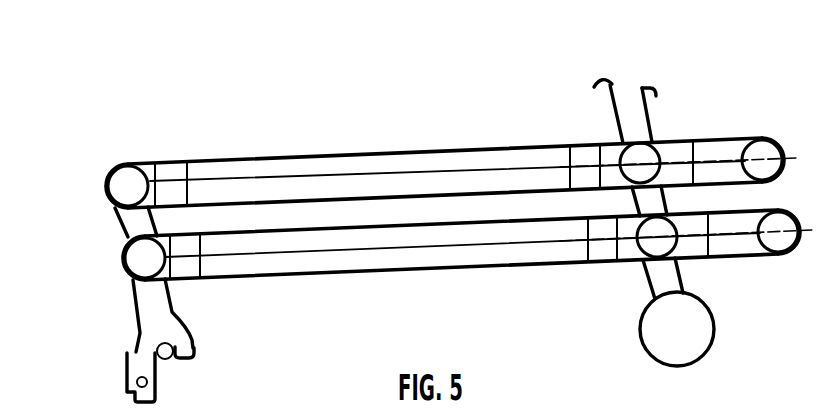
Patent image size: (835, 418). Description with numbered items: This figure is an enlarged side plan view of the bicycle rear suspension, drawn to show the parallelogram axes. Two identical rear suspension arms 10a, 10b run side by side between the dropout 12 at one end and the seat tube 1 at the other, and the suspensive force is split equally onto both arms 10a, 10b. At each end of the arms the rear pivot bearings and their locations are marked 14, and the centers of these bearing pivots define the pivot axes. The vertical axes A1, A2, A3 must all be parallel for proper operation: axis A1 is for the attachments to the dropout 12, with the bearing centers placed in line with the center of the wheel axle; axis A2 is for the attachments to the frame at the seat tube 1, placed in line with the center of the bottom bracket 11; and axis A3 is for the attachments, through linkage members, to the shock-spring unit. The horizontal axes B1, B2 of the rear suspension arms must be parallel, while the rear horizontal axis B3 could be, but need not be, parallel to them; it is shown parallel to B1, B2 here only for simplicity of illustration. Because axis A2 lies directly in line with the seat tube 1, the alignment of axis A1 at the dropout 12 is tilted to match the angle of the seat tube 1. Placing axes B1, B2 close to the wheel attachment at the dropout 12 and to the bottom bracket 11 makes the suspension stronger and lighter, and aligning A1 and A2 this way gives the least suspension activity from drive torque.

The seat tube 1 is at (611, 98).
The rear suspension arm 10a is at (365, 163).
The rear suspension arm 10b is at (383, 262).
The bottom bracket 11 is at (648, 352).
The dropout 12 is at (146, 306).
The rear pivot bearing location 14 is at (129, 243).
The vertical axis A1 is at (169, 370).
The vertical axis A2 is at (688, 380).
The vertical axis A3 is at (786, 268).
The horizontal axis B1 is at (200, 183).
The horizontal axis B2 is at (200, 256).
The rear horizontal axis B3 is at (727, 327).